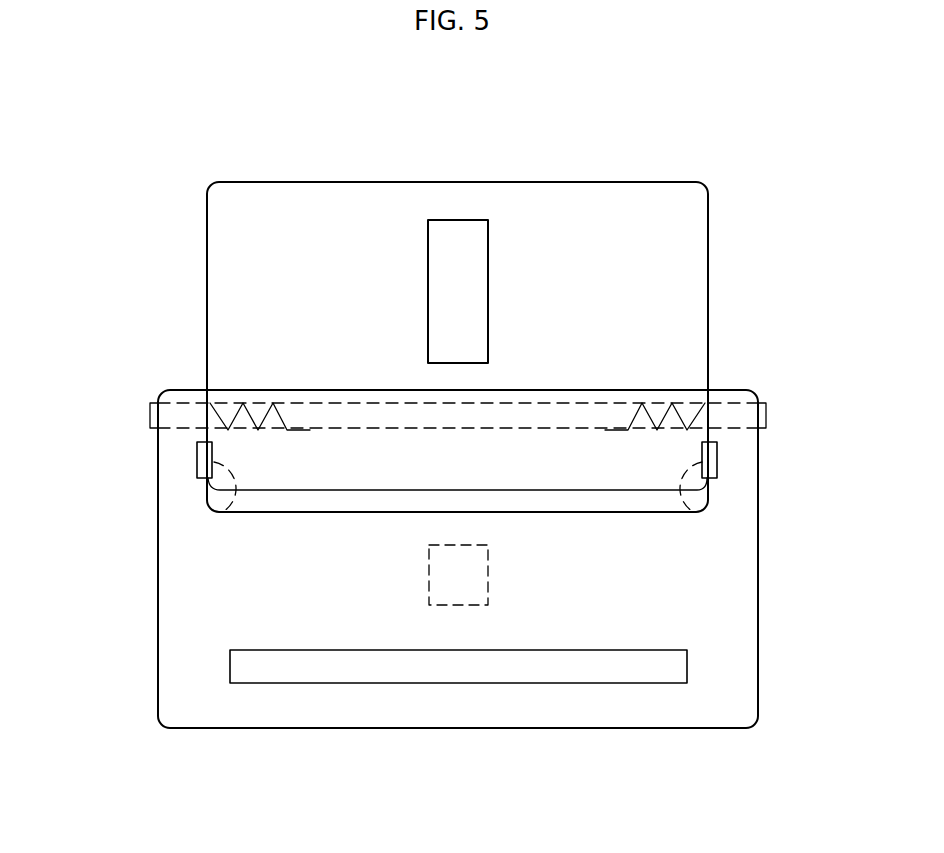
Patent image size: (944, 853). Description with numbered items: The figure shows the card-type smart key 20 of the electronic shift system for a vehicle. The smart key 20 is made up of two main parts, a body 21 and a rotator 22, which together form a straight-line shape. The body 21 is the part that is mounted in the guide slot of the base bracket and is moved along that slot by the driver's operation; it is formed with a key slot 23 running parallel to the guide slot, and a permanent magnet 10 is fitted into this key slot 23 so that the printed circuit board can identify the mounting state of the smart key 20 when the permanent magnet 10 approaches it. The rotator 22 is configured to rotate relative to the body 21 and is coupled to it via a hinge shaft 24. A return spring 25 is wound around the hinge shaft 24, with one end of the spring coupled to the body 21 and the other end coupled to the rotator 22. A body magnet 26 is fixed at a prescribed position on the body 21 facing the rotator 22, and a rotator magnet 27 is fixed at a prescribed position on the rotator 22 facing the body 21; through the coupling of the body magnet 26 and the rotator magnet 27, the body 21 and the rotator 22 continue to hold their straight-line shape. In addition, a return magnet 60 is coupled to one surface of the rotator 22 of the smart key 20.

The permanent magnet 10 is at (457, 606).
The smart key 20 is at (365, 172).
The body 21 is at (192, 643).
The rotator 22 is at (590, 186).
The key slot 23 is at (555, 675).
The hinge shaft 24 is at (152, 415).
The return spring 25 is at (243, 395).
The body magnet 26 is at (200, 462).
The rotator magnet 27 is at (228, 507).
The return magnet 60 is at (462, 228).